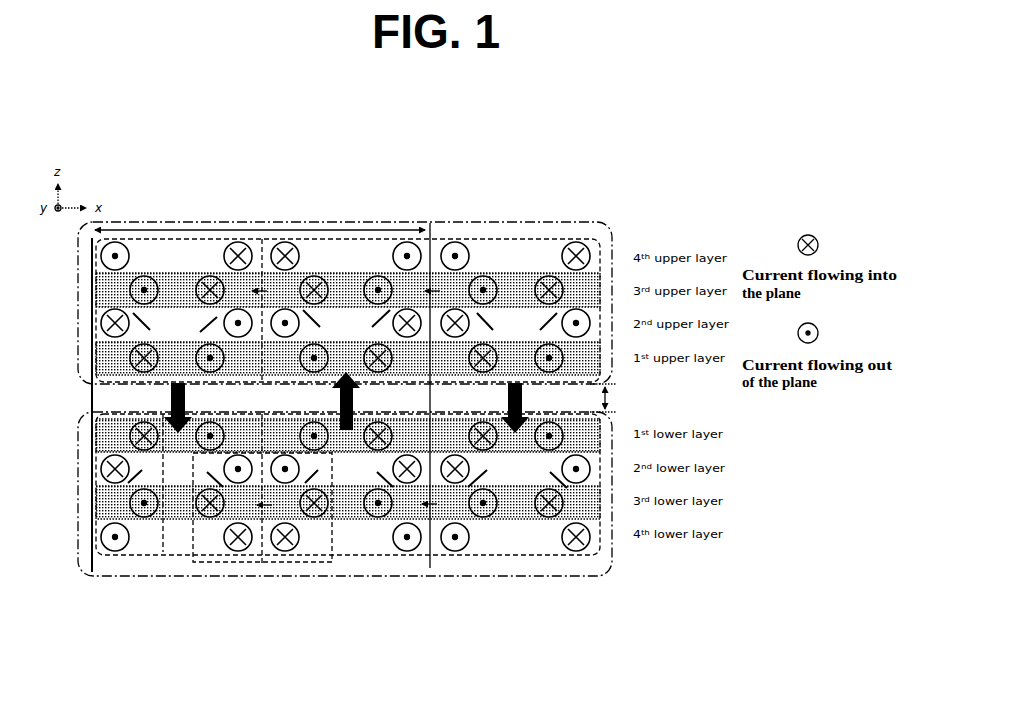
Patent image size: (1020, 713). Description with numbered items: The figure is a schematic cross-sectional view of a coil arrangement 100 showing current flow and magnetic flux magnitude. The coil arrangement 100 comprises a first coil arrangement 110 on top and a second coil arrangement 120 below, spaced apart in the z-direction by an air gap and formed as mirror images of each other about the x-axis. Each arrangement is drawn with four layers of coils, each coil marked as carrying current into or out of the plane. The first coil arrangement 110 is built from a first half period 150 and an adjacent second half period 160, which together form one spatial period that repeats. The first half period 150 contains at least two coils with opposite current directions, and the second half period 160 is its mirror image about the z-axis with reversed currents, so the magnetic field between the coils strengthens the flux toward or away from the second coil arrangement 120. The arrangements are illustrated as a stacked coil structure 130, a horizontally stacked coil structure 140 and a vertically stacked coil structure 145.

The coil arrangement 100 is at (630, 208).
The first coil arrangement 110 is at (617, 243).
The second coil arrangement 120 is at (615, 540).
The stacked coil structure 130 is at (236, 561).
The horizontally stacked coil structure 140 is at (91, 423).
The vertically stacked coil structure 145 is at (91, 502).
The first half period 150 is at (91, 240).
The second half period 160 is at (344, 222).